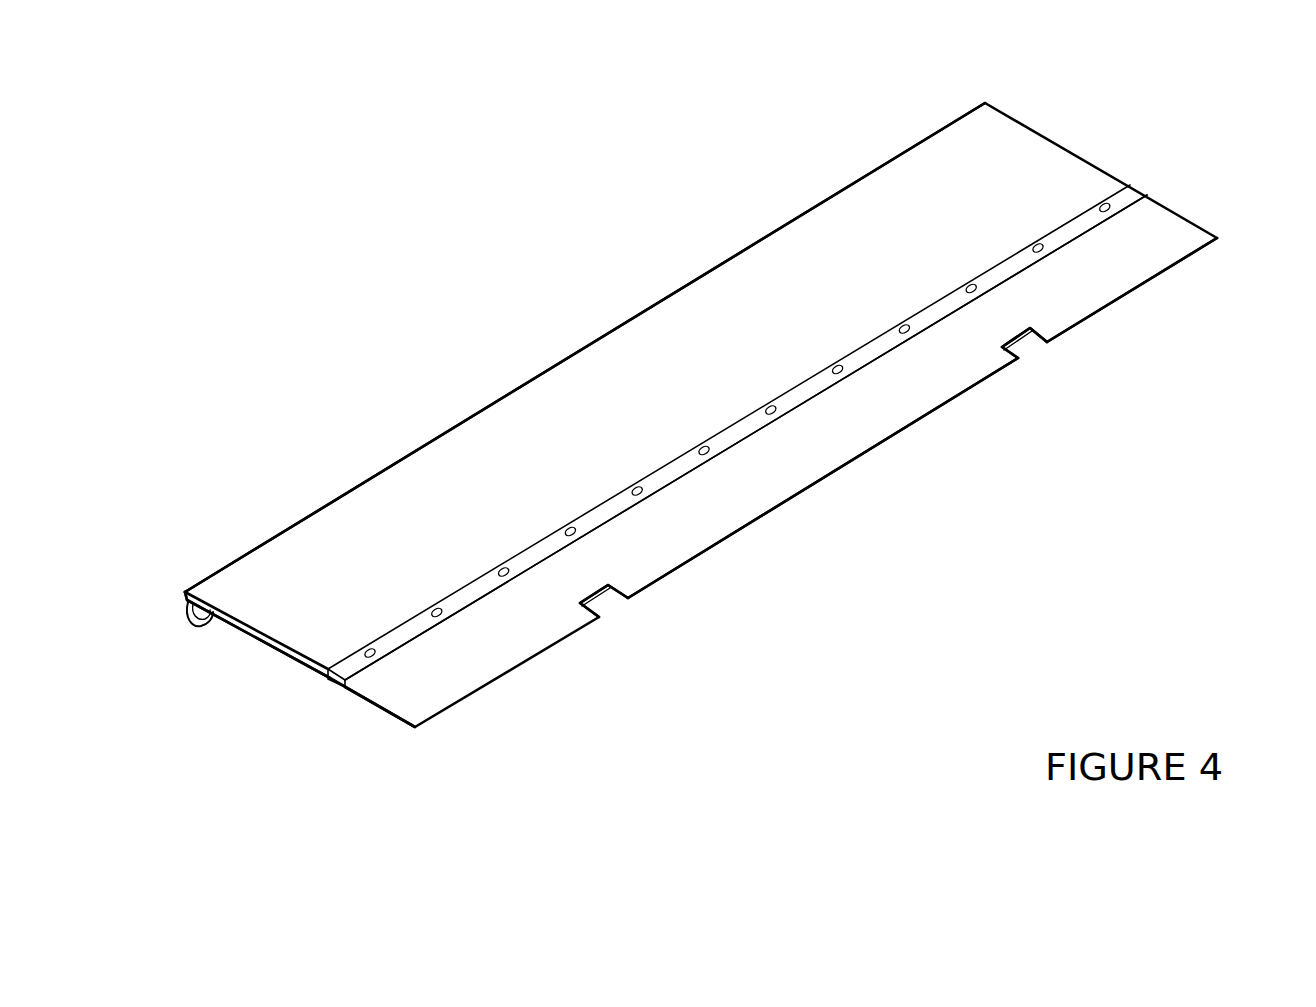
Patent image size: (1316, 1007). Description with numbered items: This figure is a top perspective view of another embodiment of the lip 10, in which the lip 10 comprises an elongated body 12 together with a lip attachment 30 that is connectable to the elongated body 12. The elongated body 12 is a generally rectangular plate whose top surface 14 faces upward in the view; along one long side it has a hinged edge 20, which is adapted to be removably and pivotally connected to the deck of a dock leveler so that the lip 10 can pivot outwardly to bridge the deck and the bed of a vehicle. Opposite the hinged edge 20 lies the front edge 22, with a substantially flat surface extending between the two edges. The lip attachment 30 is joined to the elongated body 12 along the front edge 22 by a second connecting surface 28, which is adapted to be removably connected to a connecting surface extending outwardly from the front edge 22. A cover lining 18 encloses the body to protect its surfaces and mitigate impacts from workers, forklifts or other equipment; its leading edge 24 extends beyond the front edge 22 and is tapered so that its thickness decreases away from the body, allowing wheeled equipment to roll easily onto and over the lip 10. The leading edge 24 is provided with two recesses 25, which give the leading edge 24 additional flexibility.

The lip 10 is at (718, 426).
The elongated body 12 is at (542, 417).
The top surface 14 is at (1020, 148).
The cover lining 18 is at (849, 438).
The hinged edge 20 is at (346, 470).
The front edge 22 is at (318, 692).
The leading edge 24 is at (925, 381).
The recesses 25 is at (608, 608).
The second connecting surface 28 is at (353, 666).
The lip attachment 30 is at (1200, 195).